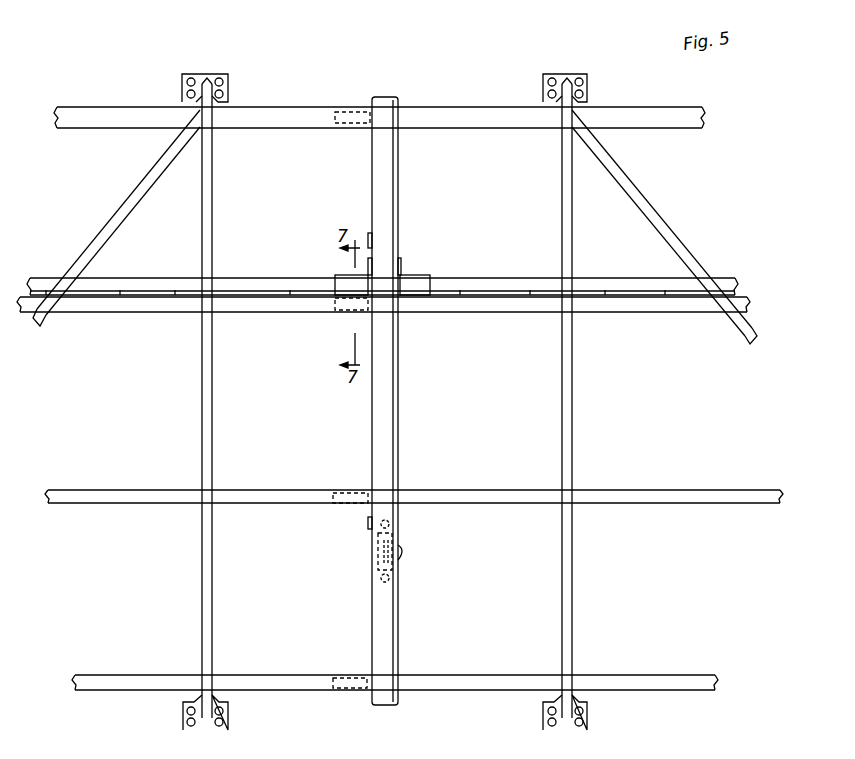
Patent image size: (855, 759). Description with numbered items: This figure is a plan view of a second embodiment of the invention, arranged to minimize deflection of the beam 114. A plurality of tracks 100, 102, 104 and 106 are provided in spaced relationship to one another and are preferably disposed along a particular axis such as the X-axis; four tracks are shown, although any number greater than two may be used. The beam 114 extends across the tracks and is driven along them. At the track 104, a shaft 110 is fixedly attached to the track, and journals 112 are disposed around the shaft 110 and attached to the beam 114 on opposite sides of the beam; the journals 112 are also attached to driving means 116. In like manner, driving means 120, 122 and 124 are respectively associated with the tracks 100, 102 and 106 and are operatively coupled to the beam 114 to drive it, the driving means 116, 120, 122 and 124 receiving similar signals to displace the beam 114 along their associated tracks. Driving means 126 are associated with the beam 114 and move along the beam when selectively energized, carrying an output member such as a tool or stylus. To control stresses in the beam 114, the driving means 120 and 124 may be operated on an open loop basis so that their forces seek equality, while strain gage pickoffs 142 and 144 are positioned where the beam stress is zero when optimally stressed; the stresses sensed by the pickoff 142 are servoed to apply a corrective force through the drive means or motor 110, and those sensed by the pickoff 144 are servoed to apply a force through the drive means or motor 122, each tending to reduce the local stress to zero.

The track 100 is at (612, 678).
The track 102 is at (598, 497).
The track 104 is at (596, 310).
The track 106 is at (652, 118).
The shaft 110 is at (270, 283).
The journals 112 is at (350, 283).
The beam 114 is at (383, 415).
The driving means 116 is at (346, 315).
The driving means 120 is at (348, 676).
The driving means 122 is at (344, 506).
The driving means 124 is at (348, 128).
The driving means 126 is at (396, 538).
The strain gage pickoff 142 is at (366, 240).
The strain gage pickoff 144 is at (368, 523).